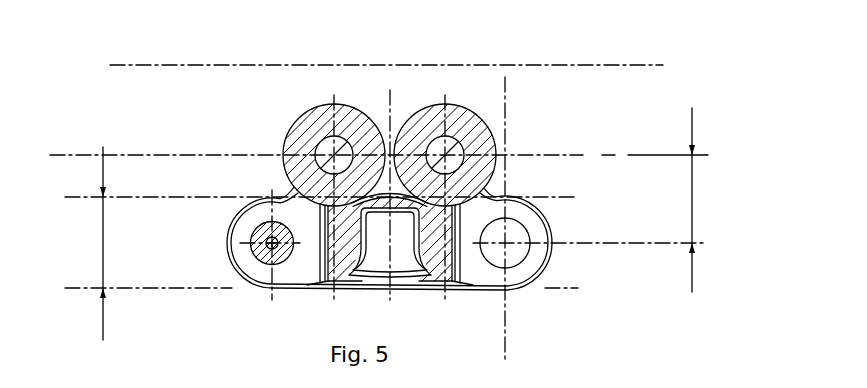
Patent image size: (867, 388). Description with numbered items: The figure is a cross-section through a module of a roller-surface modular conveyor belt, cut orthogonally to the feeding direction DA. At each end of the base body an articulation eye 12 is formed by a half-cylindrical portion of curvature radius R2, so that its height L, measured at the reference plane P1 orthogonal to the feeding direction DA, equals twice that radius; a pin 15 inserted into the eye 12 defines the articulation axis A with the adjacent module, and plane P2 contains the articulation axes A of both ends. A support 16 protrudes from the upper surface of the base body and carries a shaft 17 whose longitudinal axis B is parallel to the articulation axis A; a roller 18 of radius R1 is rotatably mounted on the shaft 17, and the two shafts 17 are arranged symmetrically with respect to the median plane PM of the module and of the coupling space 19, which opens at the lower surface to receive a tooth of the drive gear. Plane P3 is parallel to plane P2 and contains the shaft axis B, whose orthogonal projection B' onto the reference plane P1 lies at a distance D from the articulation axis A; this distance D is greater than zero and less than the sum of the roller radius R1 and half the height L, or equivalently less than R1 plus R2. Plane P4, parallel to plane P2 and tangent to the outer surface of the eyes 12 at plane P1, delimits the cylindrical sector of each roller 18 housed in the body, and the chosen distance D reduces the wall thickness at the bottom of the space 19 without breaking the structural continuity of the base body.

The articulation eye 12 is at (546, 266).
The pin 15 is at (251, 236).
The support 16 is at (308, 112).
The shaft 17 is at (313, 157).
The roller 18 is at (310, 122).
The coupling space 19 is at (402, 260).
The roller radius R1 is at (398, 107).
The curvature radius of the eye R2 is at (224, 268).
The longitudinal axis of the shaft B is at (358, 105).
The orthogonal projection of the shaft axis B' is at (533, 124).
The articulation axis A is at (225, 203).
The height of the eye L is at (103, 223).
The distance D is at (692, 185).
The reference plane P1 is at (507, 88).
The plane containing the articulation axes P2 is at (605, 245).
The plane containing the shaft axis P3 is at (583, 155).
The tangent plane P4 is at (575, 196).
The median plane PM is at (390, 280).
The feeding direction DA is at (618, 64).